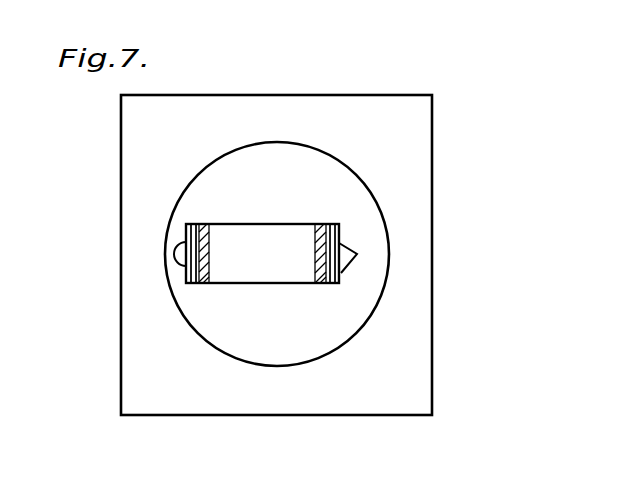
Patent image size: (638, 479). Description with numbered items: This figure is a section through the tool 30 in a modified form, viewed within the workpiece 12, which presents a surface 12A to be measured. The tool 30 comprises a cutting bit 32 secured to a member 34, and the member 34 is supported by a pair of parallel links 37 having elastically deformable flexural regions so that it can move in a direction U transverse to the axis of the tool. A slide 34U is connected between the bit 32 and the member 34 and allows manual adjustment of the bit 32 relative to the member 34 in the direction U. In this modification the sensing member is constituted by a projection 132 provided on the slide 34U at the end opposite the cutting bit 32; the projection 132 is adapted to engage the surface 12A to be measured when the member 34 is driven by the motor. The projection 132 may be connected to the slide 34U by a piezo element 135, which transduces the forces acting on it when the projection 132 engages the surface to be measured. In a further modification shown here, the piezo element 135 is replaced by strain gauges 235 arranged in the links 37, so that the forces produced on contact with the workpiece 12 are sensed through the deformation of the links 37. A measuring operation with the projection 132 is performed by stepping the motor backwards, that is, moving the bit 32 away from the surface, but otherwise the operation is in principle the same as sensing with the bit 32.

The workpiece 12 is at (432, 190).
The surface 12A is at (202, 173).
The tool 30 is at (298, 224).
The slide 34U is at (184, 232).
The strain gauges 235 is at (315, 262).
The parallel links 37 is at (207, 283).
The member 34 is at (294, 284).
The projection 132 is at (170, 256).
The piezo element 135 is at (186, 280).
The cutting bit 32 is at (349, 264).